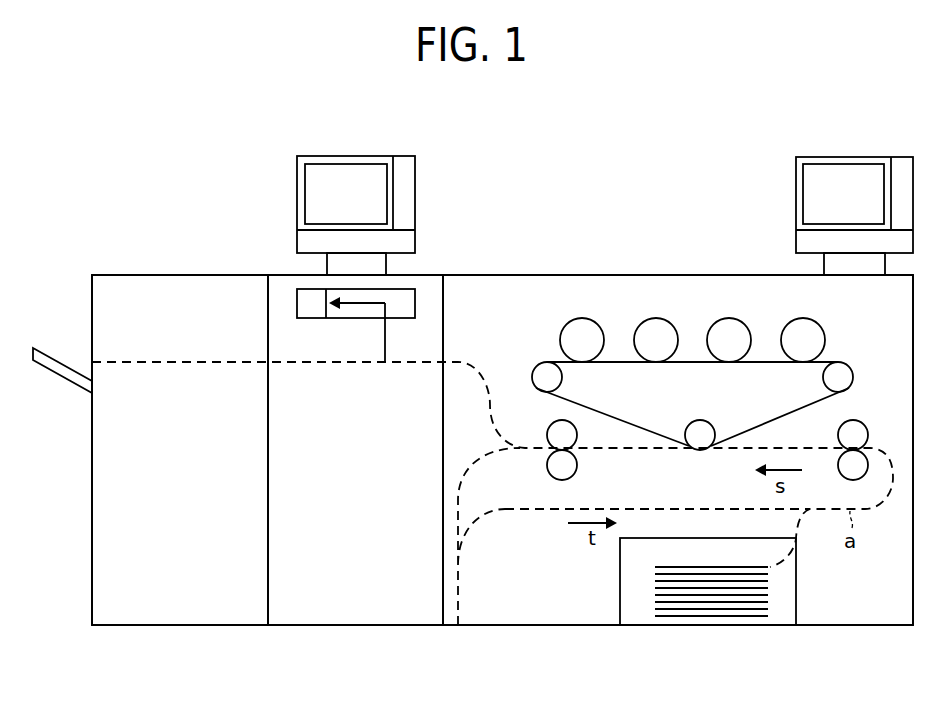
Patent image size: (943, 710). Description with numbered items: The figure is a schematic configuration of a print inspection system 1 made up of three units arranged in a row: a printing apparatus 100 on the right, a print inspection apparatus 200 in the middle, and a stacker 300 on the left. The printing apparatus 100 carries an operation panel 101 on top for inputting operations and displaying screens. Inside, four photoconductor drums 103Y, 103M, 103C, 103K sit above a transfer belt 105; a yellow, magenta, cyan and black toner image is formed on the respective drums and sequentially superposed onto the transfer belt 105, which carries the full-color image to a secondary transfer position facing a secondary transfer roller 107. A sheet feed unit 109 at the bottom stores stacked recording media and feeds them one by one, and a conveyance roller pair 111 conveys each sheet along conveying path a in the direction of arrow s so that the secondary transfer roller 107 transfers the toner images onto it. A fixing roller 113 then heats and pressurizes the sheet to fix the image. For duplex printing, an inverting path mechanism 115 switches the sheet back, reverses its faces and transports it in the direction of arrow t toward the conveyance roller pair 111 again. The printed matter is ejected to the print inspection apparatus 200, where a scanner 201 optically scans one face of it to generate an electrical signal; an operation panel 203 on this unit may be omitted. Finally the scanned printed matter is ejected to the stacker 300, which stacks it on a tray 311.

The print inspection system 1 is at (184, 163).
The printing apparatus 100 is at (645, 274).
The operation panel 101 is at (796, 188).
The photoconductor drum 103K is at (574, 318).
The photoconductor drum 103C is at (648, 318).
The photoconductor drum 103M is at (721, 318).
The photoconductor drum 103Y is at (795, 318).
The transfer belt 105 is at (627, 400).
The secondary transfer roller 107 is at (702, 419).
The sheet feed unit 109 is at (620, 595).
The conveyance roller pair 111 is at (856, 421).
The fixing roller 113 is at (551, 423).
The inverting path mechanism 115 is at (460, 596).
The print inspection apparatus 200 is at (356, 627).
The scanner 201 is at (347, 318).
The operation panel 203 is at (297, 188).
The stacker 300 is at (182, 274).
The tray 311 is at (66, 378).